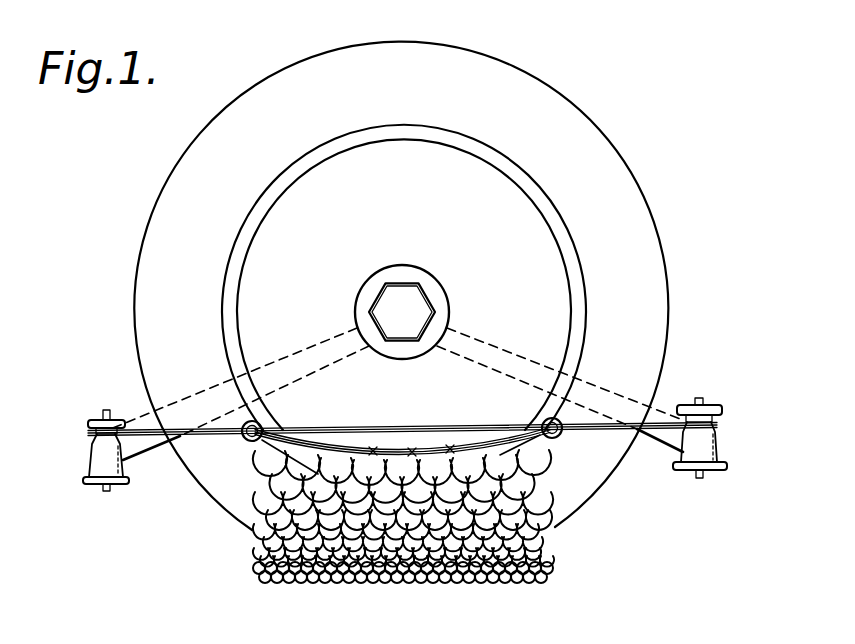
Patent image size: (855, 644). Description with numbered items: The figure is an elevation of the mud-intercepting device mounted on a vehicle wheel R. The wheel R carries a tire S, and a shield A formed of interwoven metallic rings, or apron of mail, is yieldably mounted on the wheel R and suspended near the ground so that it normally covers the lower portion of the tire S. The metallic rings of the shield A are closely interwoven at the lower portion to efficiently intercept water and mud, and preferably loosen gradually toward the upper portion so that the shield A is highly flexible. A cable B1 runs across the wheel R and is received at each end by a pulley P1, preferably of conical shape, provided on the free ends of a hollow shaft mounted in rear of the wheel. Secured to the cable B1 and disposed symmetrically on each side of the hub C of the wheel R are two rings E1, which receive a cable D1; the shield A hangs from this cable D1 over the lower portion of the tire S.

The tire S is at (260, 135).
The vehicle wheel R is at (480, 197).
The hub C is at (433, 288).
The rings E1 is at (258, 425).
The cable D1 is at (398, 453).
The cable B1 is at (458, 428).
The pulley P1 is at (108, 457).
The shield of interwoven metallic rings A is at (545, 545).